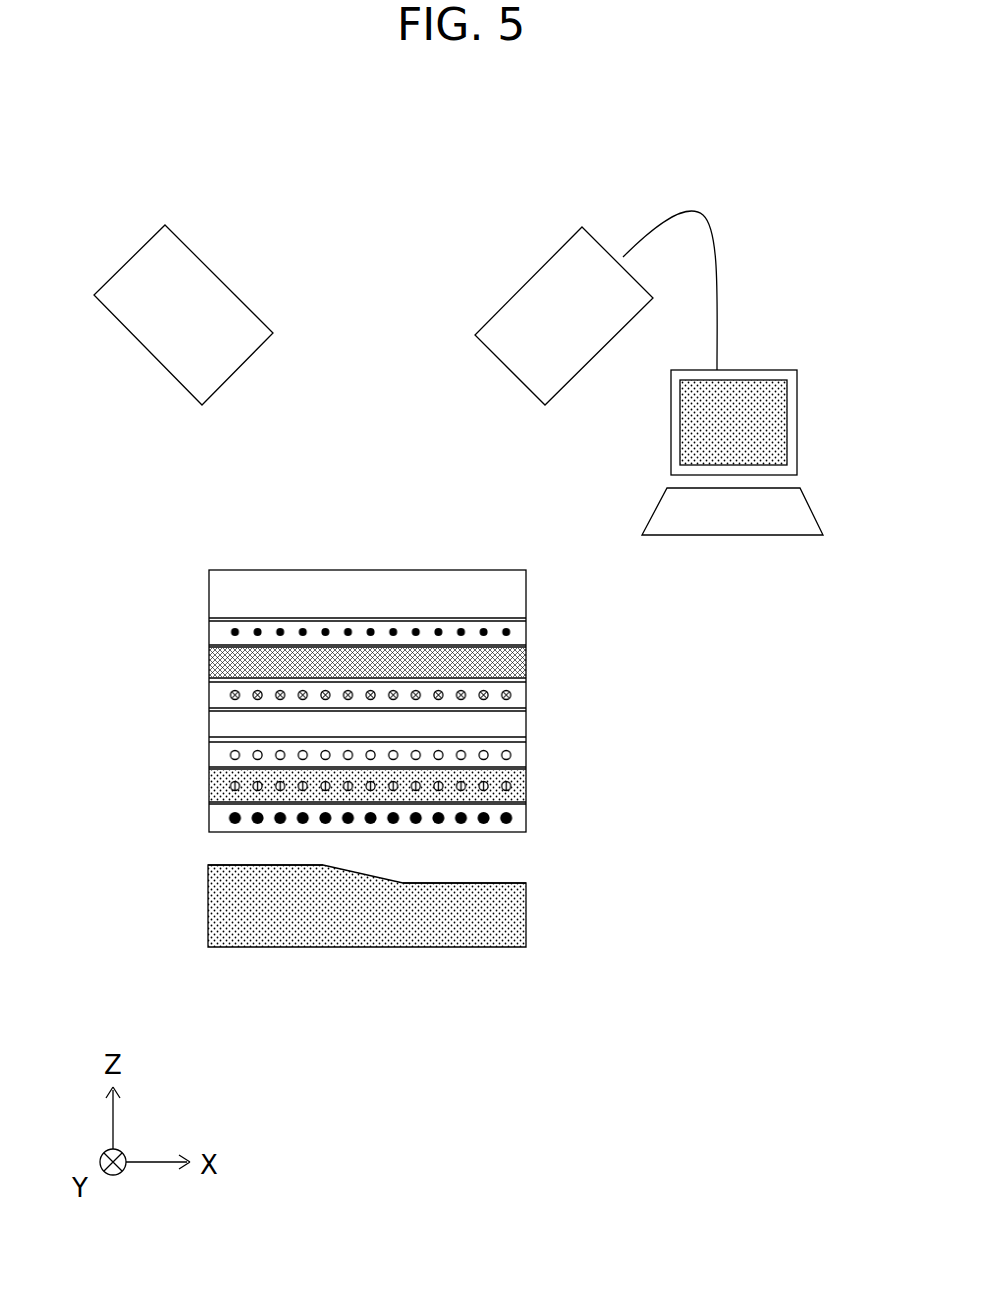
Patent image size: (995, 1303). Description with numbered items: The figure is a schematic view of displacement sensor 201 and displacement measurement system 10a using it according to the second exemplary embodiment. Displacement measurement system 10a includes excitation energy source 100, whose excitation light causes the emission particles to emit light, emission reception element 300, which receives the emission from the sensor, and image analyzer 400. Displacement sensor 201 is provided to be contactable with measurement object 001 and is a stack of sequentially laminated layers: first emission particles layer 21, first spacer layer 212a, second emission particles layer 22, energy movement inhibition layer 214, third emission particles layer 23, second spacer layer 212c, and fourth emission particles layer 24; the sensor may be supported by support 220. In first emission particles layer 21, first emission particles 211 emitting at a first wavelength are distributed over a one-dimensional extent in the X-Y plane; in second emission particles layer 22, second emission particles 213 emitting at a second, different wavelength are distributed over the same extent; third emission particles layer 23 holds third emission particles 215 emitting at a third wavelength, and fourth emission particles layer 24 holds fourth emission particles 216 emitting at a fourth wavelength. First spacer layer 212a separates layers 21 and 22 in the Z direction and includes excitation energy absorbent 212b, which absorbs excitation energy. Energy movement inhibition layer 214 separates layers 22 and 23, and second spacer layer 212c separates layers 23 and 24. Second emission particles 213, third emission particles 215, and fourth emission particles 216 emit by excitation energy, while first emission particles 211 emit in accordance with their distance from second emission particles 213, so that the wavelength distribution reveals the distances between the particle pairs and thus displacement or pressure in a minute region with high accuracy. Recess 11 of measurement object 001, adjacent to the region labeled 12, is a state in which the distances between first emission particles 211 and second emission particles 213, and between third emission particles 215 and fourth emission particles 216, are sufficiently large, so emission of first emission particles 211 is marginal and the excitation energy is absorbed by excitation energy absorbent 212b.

The displacement measurement system 10a is at (363, 140).
The excitation energy source 100 is at (218, 278).
The emission reception element 300 is at (528, 280).
The image analyzer 400 is at (753, 370).
The displacement sensor 201 is at (372, 699).
The first emission particles layer 21 is at (205, 804).
The second emission particles layer 22 is at (205, 742).
The third emission particles layer 23 is at (205, 682).
The fourth emission particles layer 24 is at (205, 621).
The support 220 is at (526, 596).
The fourth emission particles 216 is at (518, 631).
The second spacer layer 212c is at (515, 663).
The third emission particles 215 is at (526, 697).
The energy movement inhibition layer 214 is at (526, 725).
The second emission particles 213 is at (518, 755).
The first spacer layer 212a is at (515, 782).
The excitation energy absorbent 212b is at (513, 793).
The first emission particles 211 is at (518, 813).
The step portion 12 is at (238, 865).
The recess 11 is at (470, 884).
The measurement object 001 is at (525, 885).